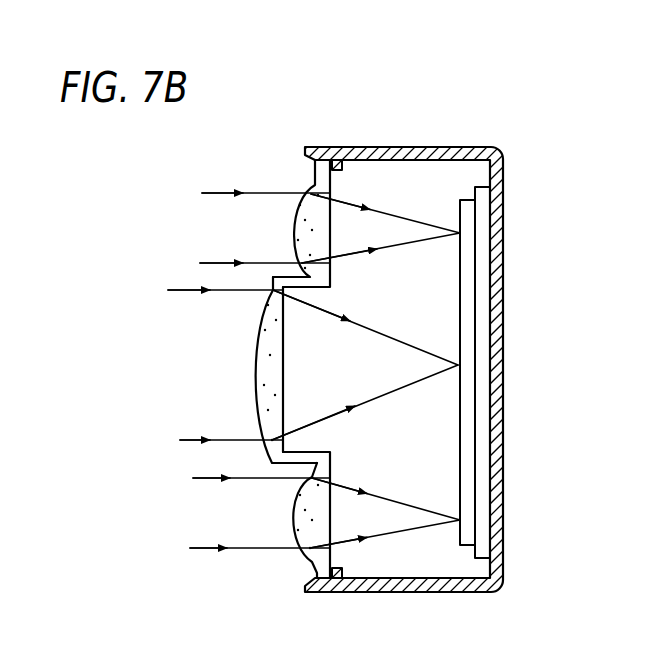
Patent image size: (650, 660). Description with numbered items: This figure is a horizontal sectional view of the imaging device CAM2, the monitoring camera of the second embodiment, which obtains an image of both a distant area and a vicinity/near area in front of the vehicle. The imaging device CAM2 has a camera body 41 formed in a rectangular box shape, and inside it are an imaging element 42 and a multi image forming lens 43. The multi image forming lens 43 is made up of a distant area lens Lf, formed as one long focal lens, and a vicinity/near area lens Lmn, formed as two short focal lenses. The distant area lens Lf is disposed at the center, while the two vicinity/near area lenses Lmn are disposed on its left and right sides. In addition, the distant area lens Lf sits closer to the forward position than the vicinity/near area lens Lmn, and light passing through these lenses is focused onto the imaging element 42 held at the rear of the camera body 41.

The imaging device CAM2 is at (460, 128).
The camera body 41 is at (503, 187).
The imaging element 42 is at (467, 350).
The multi image forming lens 43 is at (308, 565).
The vicinity/near area lens Lmn is at (295, 232).
The distant area lens Lf is at (258, 369).